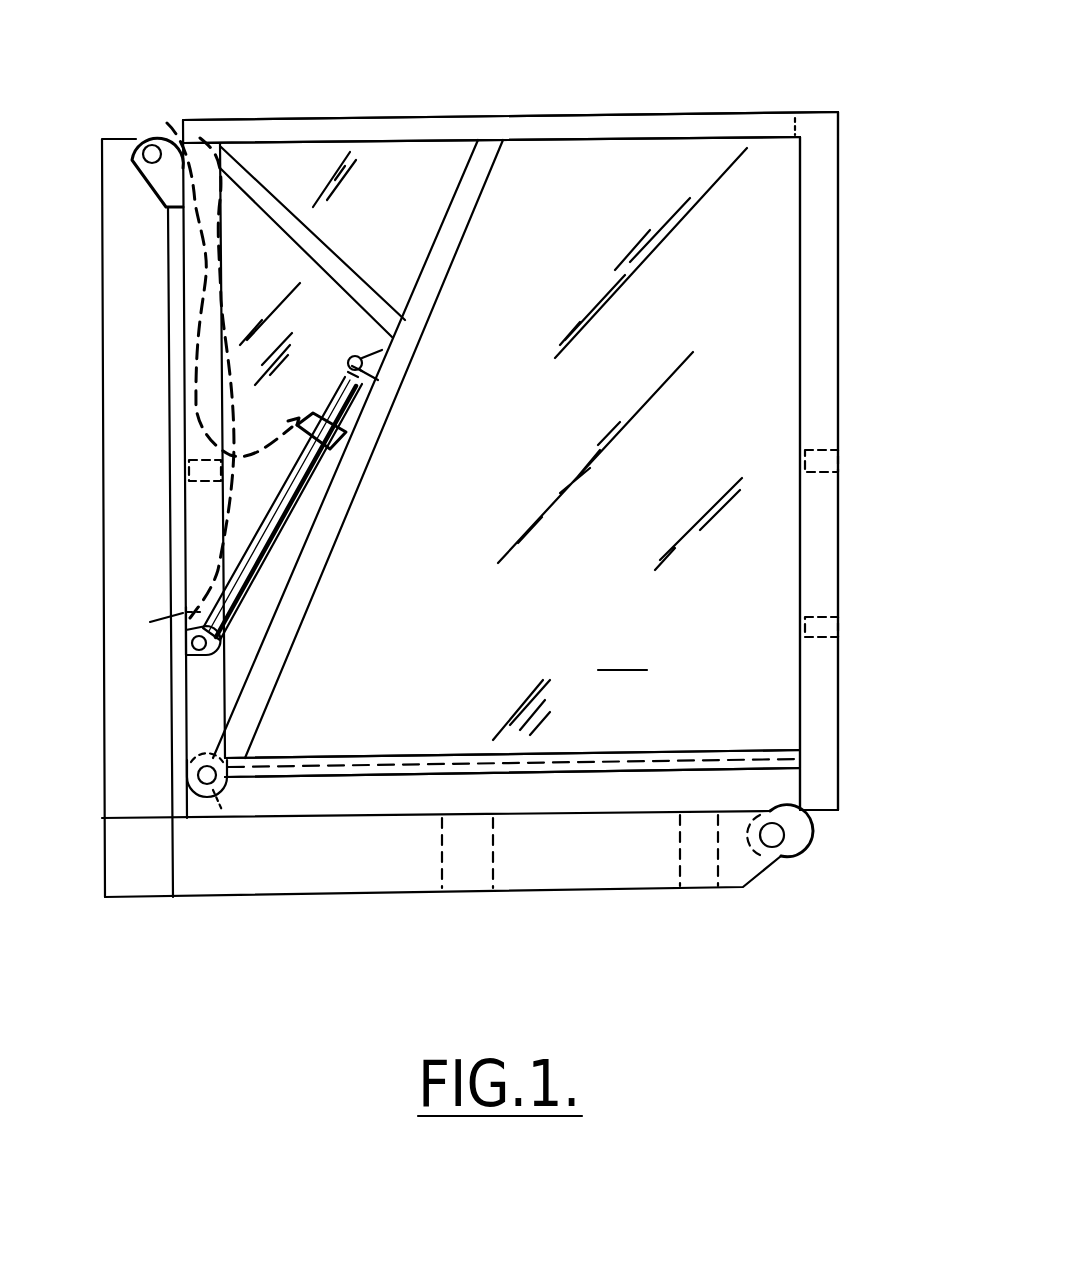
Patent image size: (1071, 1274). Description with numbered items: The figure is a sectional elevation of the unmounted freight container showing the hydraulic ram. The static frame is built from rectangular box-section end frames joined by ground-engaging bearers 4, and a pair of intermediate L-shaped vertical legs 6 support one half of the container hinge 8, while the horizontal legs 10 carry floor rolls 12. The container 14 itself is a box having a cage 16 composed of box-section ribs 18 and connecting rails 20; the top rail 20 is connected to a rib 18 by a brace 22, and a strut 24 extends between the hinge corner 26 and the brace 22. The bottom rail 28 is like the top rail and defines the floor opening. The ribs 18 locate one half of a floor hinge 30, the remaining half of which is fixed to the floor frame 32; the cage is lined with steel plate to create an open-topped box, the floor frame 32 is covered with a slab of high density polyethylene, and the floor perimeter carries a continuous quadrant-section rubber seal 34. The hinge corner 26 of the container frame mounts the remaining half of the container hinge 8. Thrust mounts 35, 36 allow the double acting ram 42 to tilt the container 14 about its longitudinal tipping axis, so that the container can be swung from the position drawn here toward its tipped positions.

The ground-engaging bearer 4 is at (470, 890).
The L-shaped vertical leg 6 is at (130, 568).
The container hinge 8 is at (153, 132).
The horizontal leg 10 is at (548, 884).
The floor roll 12 is at (800, 847).
The container 14 is at (832, 88).
The cage 16 is at (817, 423).
The box-section rib 18 is at (182, 294).
The connecting rail 20 is at (395, 118).
The brace 22 is at (453, 220).
The strut 24 is at (332, 258).
The hinge corner 26 is at (262, 157).
The bottom rail 28 is at (398, 757).
The floor hinge 30 is at (203, 795).
The floor frame 32 is at (277, 797).
The rubber seal 34 is at (650, 760).
The thrust mount 35 is at (368, 347).
The thrust mount 36 is at (199, 654).
The double acting ram 42 is at (290, 510).